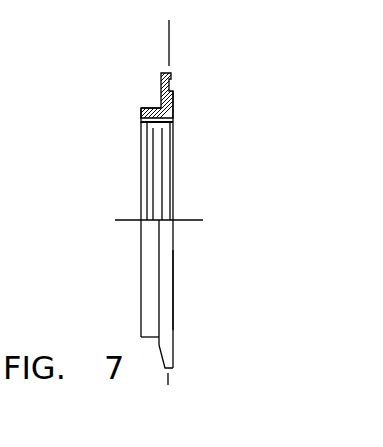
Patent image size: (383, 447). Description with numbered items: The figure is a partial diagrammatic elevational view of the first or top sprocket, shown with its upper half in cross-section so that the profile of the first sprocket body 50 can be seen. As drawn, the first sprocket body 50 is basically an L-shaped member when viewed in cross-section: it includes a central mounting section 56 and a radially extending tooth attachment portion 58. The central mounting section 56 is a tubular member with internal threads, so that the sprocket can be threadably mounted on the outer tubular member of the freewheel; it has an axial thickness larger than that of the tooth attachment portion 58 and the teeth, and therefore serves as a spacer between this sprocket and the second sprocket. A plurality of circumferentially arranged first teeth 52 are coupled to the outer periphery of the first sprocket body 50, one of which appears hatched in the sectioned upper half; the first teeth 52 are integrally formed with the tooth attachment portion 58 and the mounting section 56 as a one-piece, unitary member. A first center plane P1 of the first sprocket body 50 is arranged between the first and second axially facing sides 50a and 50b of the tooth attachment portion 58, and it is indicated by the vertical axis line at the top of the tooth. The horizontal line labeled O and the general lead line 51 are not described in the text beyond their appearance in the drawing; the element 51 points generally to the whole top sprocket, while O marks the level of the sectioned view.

The first center plane P1 is at (170, 33).
The pin assembly 51 is at (224, 72).
The first teeth 52 is at (156, 69).
The central mounting section 56 is at (140, 111).
The tooth attachment portion 58 is at (174, 101).
The center line O is at (203, 220).
The first sprocket body 50 is at (136, 242).
The first axially facing side 50a is at (174, 303).
The second axially facing side 50b is at (156, 345).